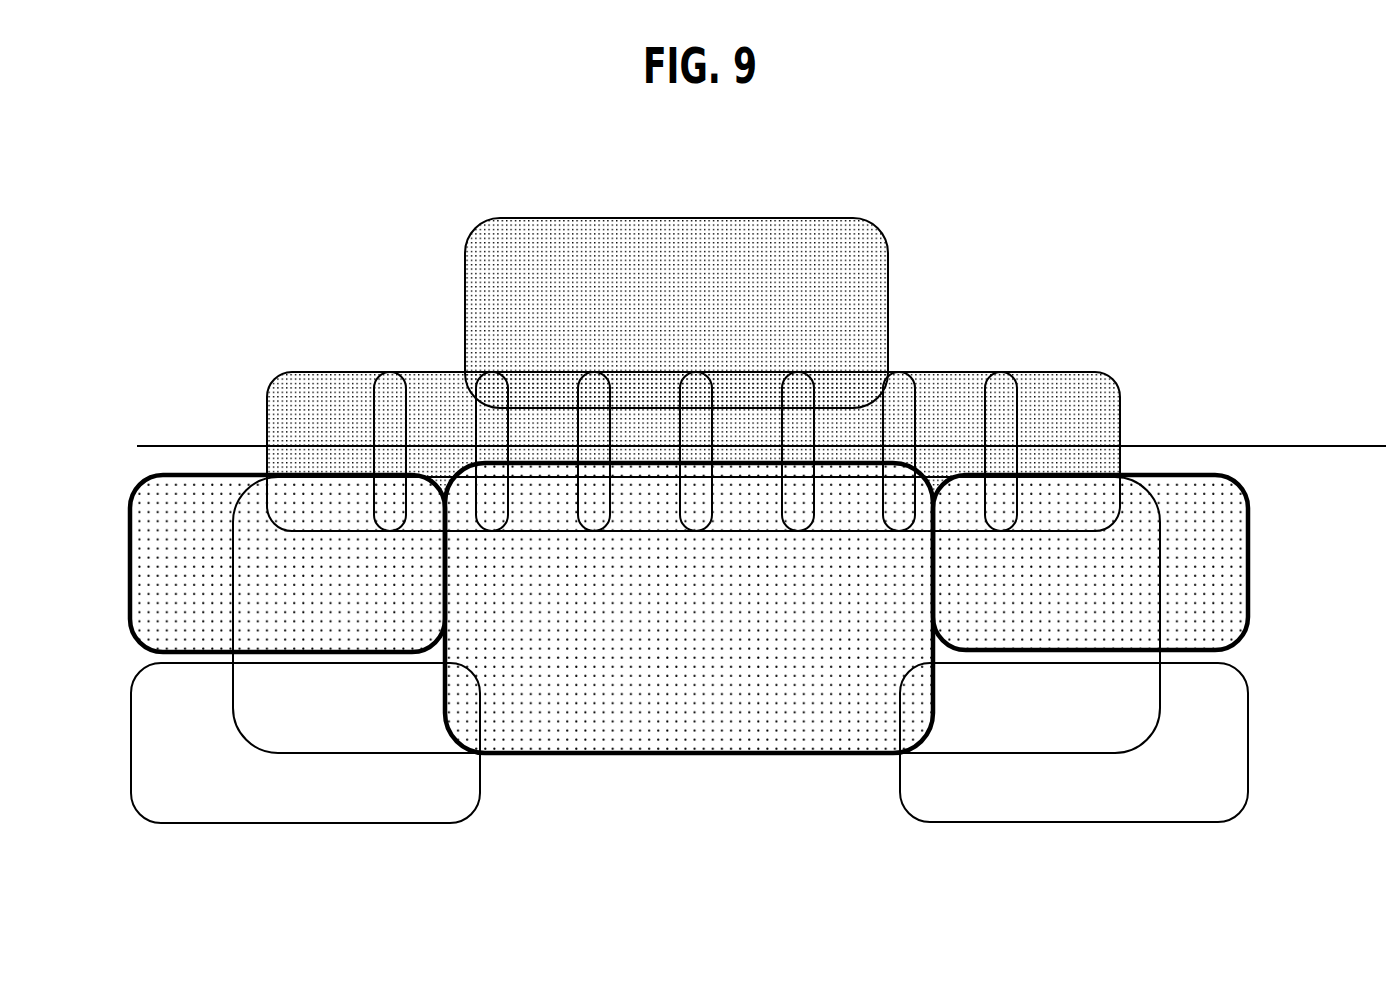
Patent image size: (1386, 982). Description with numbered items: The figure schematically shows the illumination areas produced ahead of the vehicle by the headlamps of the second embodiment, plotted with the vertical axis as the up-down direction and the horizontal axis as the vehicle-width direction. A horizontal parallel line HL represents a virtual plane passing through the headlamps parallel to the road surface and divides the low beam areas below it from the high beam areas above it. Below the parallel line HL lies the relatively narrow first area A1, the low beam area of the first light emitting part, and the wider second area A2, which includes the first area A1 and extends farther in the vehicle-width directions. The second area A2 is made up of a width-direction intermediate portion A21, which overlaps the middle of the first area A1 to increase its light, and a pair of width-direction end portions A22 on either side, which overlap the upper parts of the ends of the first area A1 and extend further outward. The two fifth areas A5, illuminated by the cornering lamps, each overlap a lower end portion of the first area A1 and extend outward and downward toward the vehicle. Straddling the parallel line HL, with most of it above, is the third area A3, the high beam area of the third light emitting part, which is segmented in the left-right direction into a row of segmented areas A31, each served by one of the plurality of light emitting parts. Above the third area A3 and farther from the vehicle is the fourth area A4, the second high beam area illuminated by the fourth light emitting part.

The fourth area A4 is at (688, 218).
The third area A3 is at (1052, 372).
The segmented areas A31 is at (523, 372).
The parallel line HL is at (178, 446).
The first area A1 is at (1160, 683).
The second area A2 is at (701, 652).
The width-direction intermediate portion A21 is at (698, 755).
The width-direction end portions A22 is at (130, 558).
The fifth area A5 is at (305, 823).